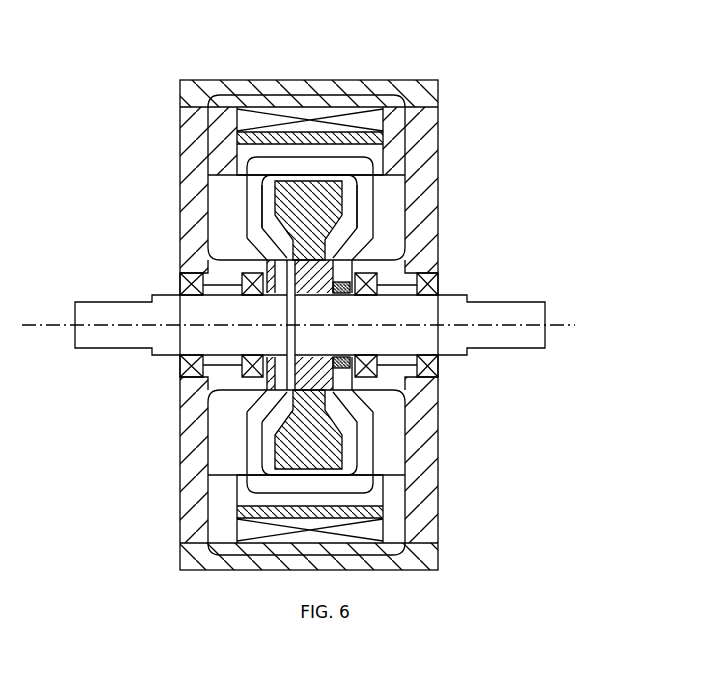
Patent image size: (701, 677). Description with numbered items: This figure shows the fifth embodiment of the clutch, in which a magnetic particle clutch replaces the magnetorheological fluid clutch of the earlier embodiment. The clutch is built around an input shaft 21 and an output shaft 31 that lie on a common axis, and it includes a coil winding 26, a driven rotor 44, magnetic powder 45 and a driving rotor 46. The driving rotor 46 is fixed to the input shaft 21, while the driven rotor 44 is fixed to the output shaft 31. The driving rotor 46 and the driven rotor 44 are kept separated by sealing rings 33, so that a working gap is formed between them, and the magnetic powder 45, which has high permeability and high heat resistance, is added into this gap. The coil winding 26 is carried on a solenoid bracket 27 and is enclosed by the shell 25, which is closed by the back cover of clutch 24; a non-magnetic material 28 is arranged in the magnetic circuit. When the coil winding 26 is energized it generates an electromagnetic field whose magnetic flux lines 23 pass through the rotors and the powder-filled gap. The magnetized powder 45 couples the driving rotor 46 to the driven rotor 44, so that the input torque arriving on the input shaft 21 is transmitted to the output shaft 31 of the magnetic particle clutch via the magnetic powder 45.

The input shaft 21 is at (172, 317).
The magnetic flux lines 23 is at (215, 177).
The back cover of clutch 24 is at (428, 218).
The shell 25 is at (400, 106).
The coil winding 26 is at (372, 128).
The solenoid bracket 27 is at (333, 147).
The non-magnetic material 28 is at (307, 174).
The output shaft 31 is at (475, 313).
The sealing ring 33 is at (355, 285).
The driven rotor 44 is at (323, 203).
The magnetic powder 45 is at (270, 195).
The driving rotor 46 is at (257, 212).